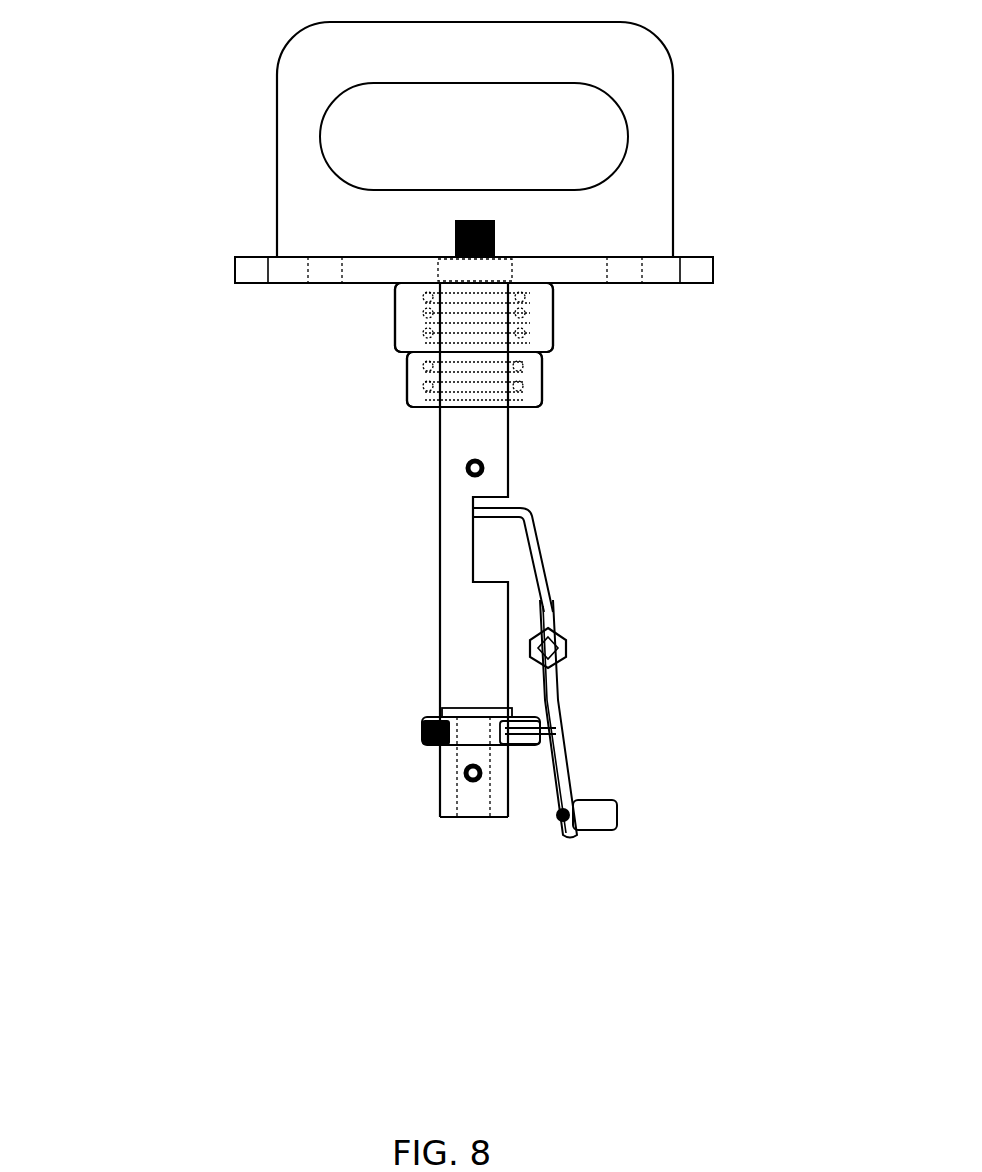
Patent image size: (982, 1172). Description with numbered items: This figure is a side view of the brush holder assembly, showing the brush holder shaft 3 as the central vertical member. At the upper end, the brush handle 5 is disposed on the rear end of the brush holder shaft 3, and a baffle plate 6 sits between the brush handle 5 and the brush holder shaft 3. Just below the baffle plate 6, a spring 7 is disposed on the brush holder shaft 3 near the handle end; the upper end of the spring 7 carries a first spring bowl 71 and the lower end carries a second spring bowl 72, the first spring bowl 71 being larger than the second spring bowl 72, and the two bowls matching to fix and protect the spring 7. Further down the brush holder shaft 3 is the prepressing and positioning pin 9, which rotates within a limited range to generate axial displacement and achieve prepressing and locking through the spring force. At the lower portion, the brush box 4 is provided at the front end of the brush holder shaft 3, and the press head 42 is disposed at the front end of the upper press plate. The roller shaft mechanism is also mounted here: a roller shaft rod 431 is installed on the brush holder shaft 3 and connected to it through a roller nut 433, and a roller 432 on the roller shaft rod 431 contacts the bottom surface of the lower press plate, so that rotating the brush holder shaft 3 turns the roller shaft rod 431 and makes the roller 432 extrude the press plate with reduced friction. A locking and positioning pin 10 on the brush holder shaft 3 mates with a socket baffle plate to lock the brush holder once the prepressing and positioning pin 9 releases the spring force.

The brush holder shaft 3 is at (465, 630).
The brush box 4 is at (553, 673).
The brush handle 5 is at (300, 98).
The baffle plate 6 is at (290, 278).
The spring 7 is at (520, 332).
The first spring bowl 71 is at (400, 323).
The second spring bowl 72 is at (412, 387).
The prepressing and positioning pin 9 is at (465, 478).
The locking and positioning pin 10 is at (467, 780).
The press head 42 is at (618, 820).
The roller shaft rod 431 is at (517, 748).
The roller 432 is at (543, 748).
The roller nut 433 is at (428, 722).